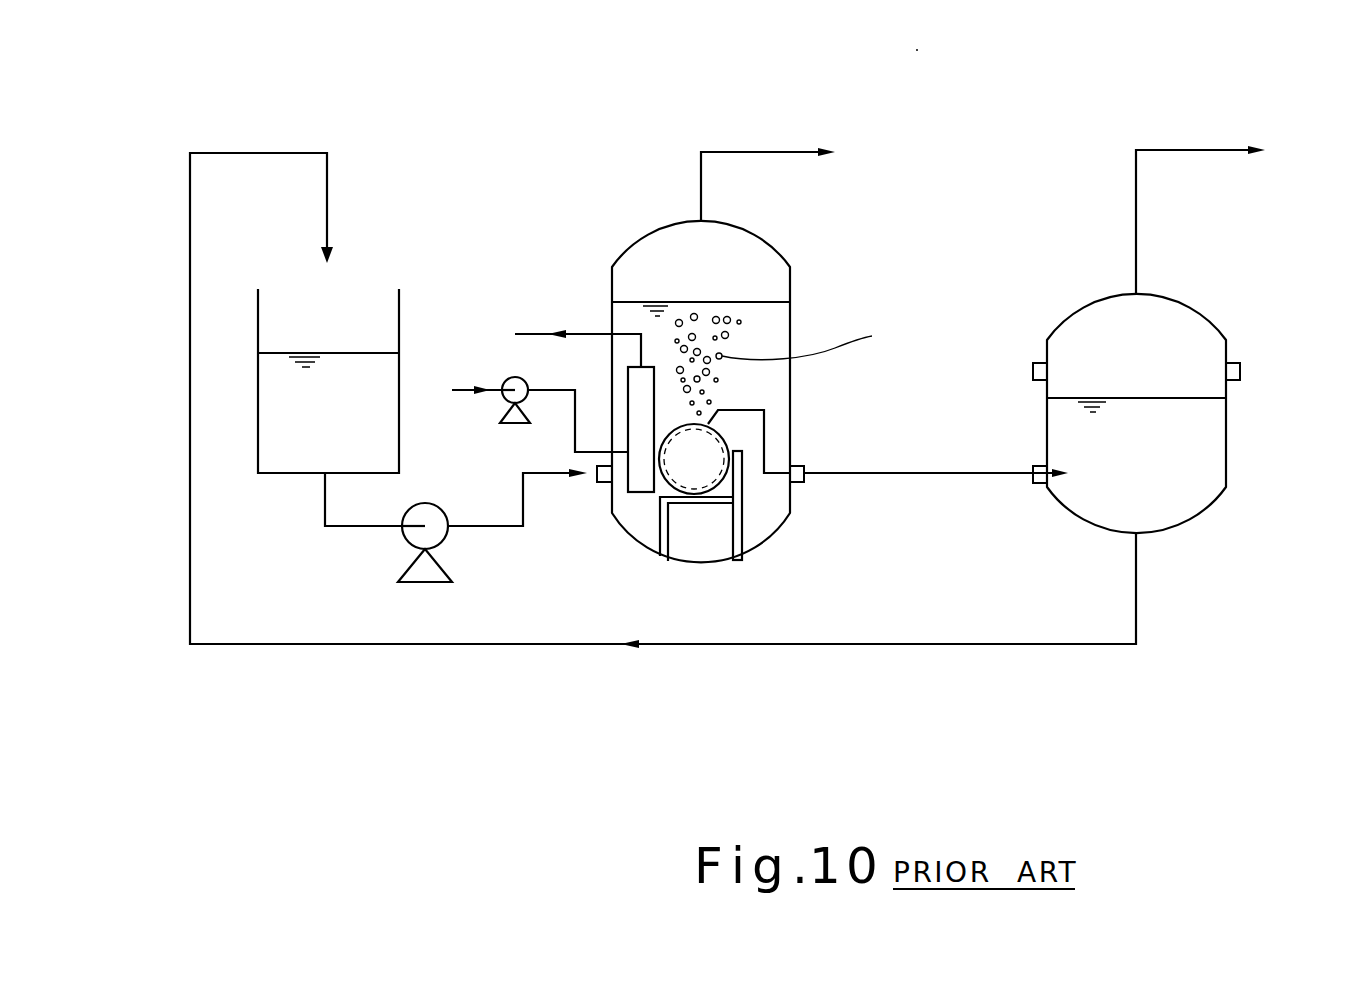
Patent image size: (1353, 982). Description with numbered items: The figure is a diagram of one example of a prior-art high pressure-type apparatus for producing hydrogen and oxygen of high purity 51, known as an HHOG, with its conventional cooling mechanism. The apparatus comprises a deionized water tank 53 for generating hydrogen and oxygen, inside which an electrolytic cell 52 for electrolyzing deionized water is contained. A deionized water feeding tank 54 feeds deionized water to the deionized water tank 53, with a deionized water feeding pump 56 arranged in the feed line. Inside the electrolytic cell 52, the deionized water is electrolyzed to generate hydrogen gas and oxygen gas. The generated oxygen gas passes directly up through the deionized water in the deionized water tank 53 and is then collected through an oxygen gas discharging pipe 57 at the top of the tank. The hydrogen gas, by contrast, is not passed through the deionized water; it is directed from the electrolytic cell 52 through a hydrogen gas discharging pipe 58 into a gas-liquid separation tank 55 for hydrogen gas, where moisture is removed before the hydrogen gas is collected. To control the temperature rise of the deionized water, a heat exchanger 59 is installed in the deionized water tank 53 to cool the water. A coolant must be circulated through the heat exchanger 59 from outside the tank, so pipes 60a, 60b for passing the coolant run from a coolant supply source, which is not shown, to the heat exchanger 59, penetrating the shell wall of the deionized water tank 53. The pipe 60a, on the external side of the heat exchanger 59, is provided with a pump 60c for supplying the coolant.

The high pressure-type apparatus for producing hydrogen and oxygen of high purity 51 is at (724, 652).
The electrolytic cell 52 is at (685, 478).
The deionized water tank 53 is at (645, 230).
The deionized water feeding tank 54 is at (399, 322).
The gas-liquid separation tank 55 is at (1198, 517).
The deionized water feeding pump 56 is at (402, 553).
The oxygen gas discharging pipe 57 is at (723, 152).
The hydrogen gas discharging pipe 58 is at (979, 472).
The heat exchanger 59 is at (643, 483).
The pipe 60a is at (495, 387).
The pipe 60b is at (583, 334).
The pump 60c is at (498, 415).